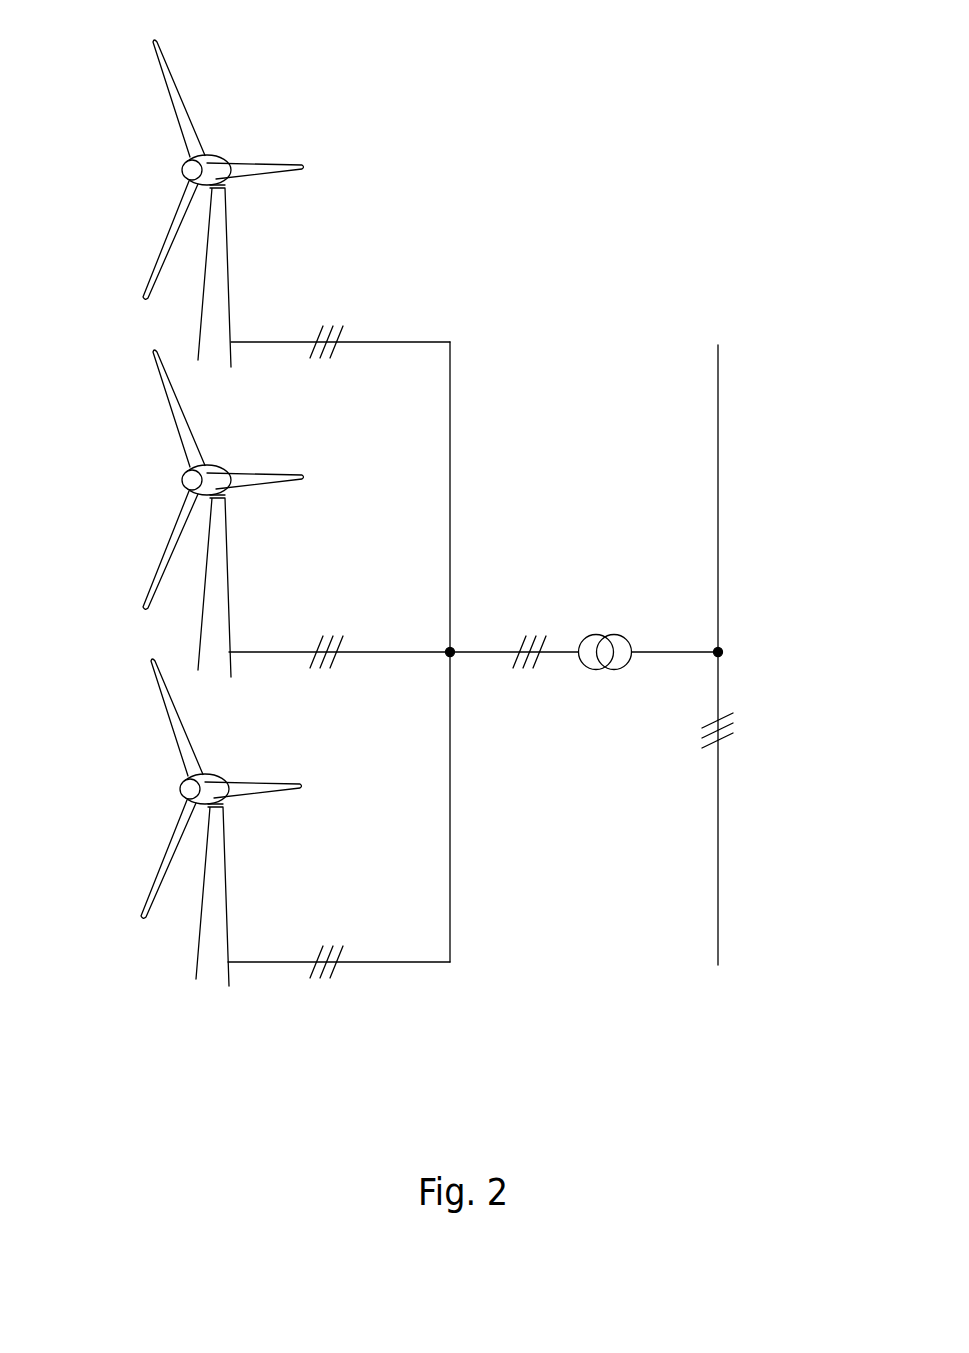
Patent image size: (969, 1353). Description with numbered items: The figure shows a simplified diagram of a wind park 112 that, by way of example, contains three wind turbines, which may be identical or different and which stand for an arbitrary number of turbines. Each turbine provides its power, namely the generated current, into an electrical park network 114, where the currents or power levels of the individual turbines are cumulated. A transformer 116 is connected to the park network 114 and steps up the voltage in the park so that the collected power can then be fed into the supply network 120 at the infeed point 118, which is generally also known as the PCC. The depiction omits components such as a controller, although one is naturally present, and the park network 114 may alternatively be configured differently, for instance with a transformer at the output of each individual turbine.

The wind park 112 is at (530, 171).
The electrical park network 114 is at (472, 652).
The transformer 116 is at (609, 626).
The infeed point 118 is at (731, 634).
The supply network 120 is at (720, 378).